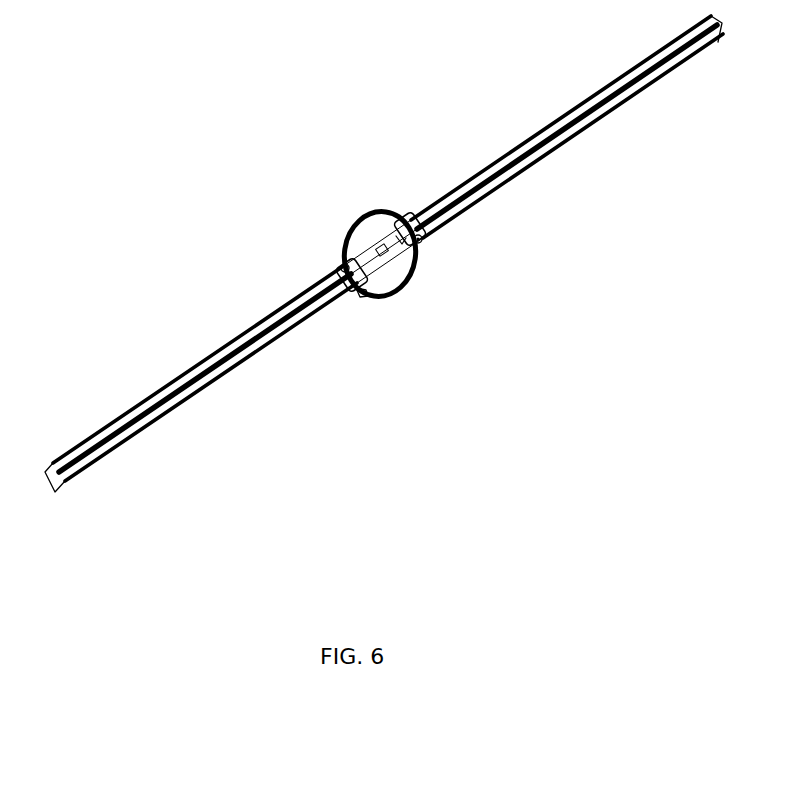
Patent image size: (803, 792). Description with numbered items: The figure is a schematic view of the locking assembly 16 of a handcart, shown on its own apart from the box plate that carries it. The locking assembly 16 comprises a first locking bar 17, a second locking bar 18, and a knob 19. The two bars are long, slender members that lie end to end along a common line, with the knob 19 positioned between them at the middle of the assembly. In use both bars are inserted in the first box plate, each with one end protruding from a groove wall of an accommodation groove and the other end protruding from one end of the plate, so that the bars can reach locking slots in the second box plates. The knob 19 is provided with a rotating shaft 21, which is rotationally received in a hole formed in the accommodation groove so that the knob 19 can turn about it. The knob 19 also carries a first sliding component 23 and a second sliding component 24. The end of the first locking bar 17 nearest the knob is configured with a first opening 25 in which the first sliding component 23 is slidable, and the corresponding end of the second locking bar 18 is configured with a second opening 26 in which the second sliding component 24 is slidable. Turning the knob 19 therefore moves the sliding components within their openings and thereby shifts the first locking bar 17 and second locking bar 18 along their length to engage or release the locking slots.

The locking assembly 16 is at (247, 134).
The first locking bar 17 is at (463, 218).
The second locking bar 18 is at (137, 407).
The knob 19 is at (368, 212).
The rotating shaft 21 is at (383, 228).
The first sliding component 23 is at (403, 218).
The second sliding component 24 is at (362, 294).
The first opening 25 is at (421, 244).
The second opening 26 is at (342, 268).